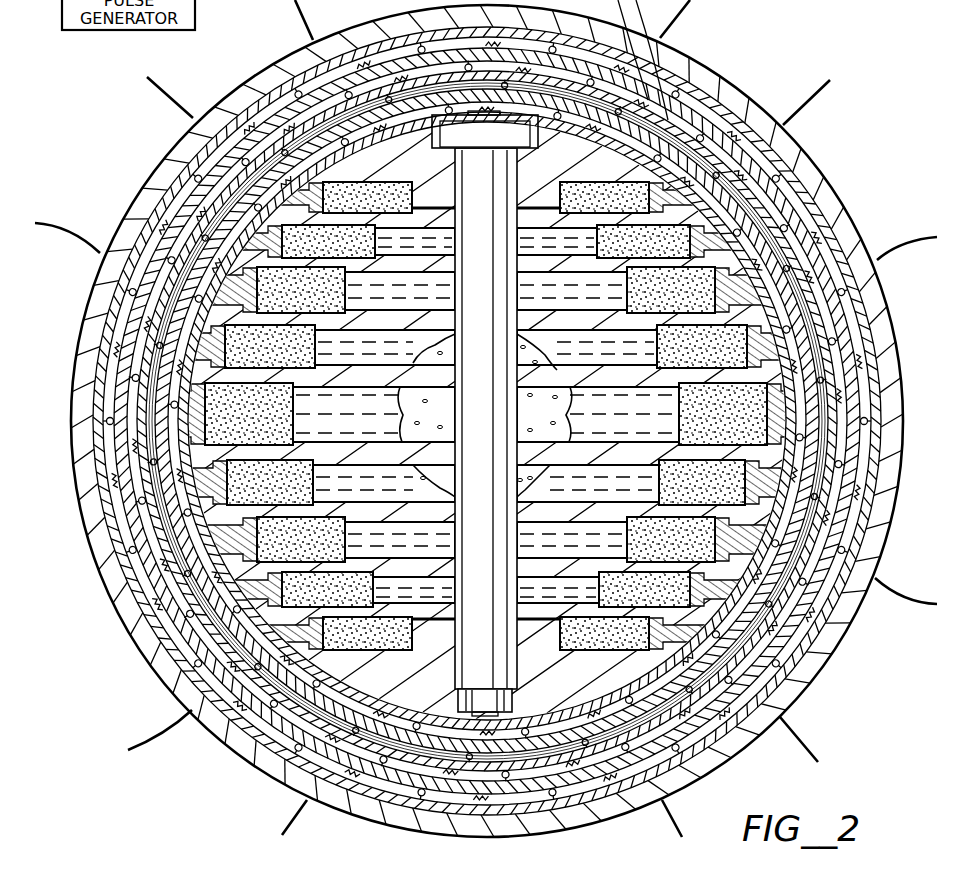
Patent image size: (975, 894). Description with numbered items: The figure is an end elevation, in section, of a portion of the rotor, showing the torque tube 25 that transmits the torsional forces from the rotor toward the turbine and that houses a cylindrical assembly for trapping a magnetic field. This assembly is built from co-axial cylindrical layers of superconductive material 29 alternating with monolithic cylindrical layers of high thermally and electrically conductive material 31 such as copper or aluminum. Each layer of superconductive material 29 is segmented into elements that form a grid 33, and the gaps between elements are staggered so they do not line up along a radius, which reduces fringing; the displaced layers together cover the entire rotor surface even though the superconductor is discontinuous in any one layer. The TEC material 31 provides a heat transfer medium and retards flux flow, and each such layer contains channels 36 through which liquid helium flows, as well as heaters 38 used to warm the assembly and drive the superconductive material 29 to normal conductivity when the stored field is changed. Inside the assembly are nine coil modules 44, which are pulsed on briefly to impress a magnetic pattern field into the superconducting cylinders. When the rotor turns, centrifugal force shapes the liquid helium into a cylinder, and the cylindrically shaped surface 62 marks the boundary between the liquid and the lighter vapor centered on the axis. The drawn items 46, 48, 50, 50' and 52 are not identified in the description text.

The torque tube 25 is at (853, 238).
The superconductive material 29 is at (170, 178).
The high thermally and electrically conductive material 31 is at (118, 346).
The grid 33 is at (198, 636).
The channels 36 is at (705, 92).
The heaters 38 is at (858, 327).
The coil modules 44 is at (605, 585).
The terminal connection 46 is at (853, 535).
The plates 48 is at (400, 570).
The central rod 50 is at (485, 400).
The rod end cap 50' is at (495, 685).
The rod bore 52 is at (500, 166).
The cylindrically shaped surface between liquid and vapor 62 is at (507, 394).